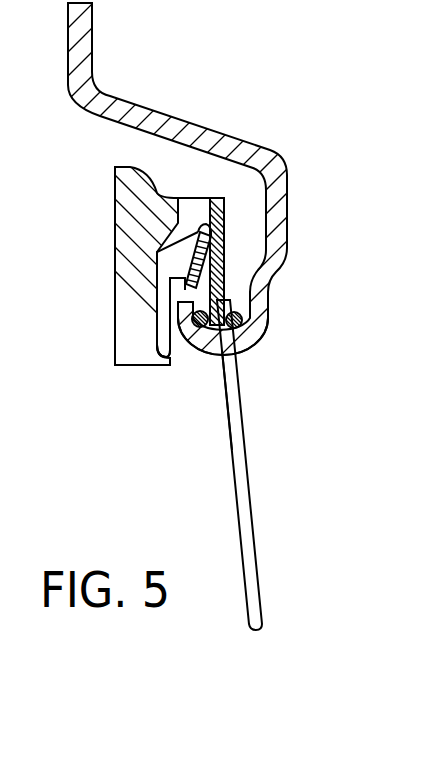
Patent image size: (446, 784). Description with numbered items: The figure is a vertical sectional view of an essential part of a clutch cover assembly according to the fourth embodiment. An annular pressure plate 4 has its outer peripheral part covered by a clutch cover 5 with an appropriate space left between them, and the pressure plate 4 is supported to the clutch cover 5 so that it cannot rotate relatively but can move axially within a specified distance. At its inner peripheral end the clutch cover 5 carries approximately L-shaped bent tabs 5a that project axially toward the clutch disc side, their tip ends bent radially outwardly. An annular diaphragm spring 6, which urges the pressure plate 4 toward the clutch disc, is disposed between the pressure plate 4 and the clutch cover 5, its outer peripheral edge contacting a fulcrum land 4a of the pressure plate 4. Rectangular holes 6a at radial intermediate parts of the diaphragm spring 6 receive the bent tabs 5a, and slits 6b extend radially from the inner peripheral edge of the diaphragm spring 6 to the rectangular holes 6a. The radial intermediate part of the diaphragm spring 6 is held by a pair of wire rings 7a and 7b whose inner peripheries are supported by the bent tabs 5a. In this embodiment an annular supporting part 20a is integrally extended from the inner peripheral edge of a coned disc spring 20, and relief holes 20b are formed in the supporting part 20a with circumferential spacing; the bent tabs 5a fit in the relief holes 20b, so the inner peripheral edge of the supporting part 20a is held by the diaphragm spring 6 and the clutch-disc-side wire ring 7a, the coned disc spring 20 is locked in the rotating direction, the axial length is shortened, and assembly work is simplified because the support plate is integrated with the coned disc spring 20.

The pressure plate 4 is at (113, 217).
The fulcrum land 4a is at (186, 200).
The clutch cover 5 is at (256, 141).
The bent tabs 5a is at (247, 347).
The diaphragm spring 6 is at (253, 519).
The rectangular holes 6a is at (212, 358).
The slits 6b is at (232, 457).
The wire ring 7a is at (195, 318).
The wire ring 7b is at (243, 322).
The coned disc spring 20 is at (208, 262).
The supporting part 20a is at (206, 352).
The relief holes 20b is at (195, 284).